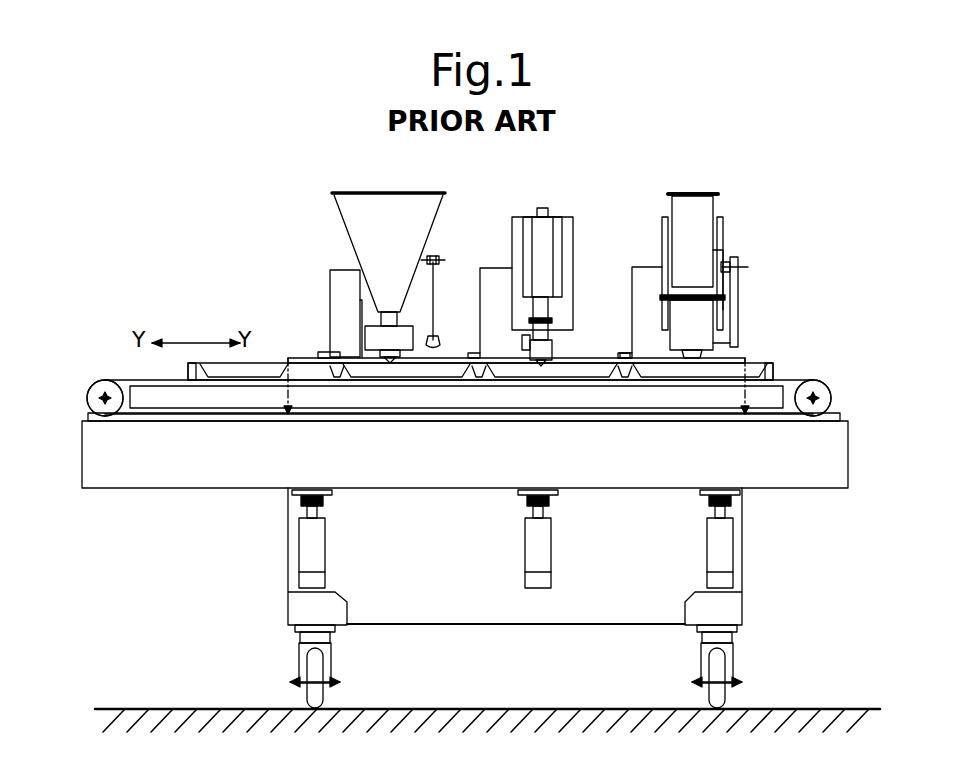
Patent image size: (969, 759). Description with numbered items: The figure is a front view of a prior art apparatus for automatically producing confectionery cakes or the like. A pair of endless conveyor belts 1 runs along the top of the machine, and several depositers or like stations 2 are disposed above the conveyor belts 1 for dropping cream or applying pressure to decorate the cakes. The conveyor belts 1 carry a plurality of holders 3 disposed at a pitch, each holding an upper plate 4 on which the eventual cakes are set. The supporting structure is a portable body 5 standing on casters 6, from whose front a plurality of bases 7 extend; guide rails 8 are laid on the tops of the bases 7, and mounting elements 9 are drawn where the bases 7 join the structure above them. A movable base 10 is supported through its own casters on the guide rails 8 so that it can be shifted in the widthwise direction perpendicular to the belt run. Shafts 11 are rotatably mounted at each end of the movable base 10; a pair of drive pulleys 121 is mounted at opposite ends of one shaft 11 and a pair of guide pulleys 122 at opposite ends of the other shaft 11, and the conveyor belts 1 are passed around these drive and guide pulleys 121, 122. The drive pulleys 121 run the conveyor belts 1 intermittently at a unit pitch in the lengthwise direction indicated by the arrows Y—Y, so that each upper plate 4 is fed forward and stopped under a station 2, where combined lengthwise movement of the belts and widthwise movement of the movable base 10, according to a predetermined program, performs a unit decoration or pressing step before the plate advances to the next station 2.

The endless conveyor belts 1 is at (785, 378).
The depositers or like stations 2 is at (376, 200).
The holders 3 is at (332, 357).
The upper plates 4 is at (262, 366).
The portable body 5 is at (497, 607).
The casters 6 is at (308, 676).
The bases 7 is at (320, 553).
The guide rails 8 is at (306, 520).
The adjusting nuts 9 is at (306, 506).
The movable base 10 is at (160, 462).
The shafts 11 is at (87, 398).
The drive pulleys 121 is at (824, 386).
The guide pulleys 122 is at (92, 386).